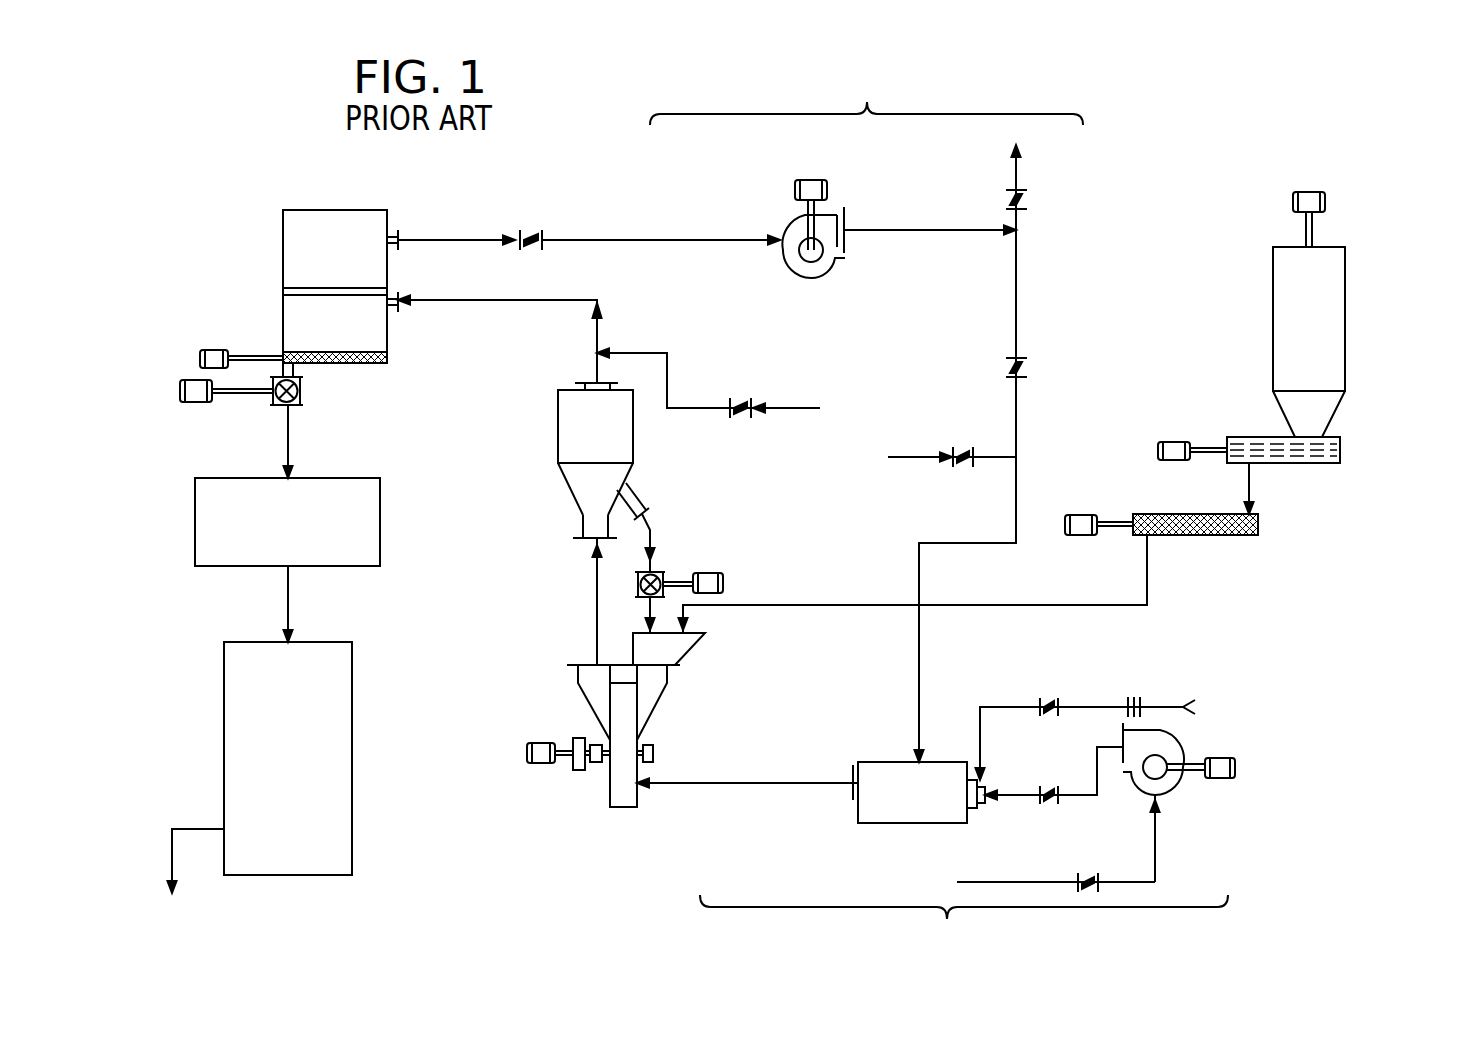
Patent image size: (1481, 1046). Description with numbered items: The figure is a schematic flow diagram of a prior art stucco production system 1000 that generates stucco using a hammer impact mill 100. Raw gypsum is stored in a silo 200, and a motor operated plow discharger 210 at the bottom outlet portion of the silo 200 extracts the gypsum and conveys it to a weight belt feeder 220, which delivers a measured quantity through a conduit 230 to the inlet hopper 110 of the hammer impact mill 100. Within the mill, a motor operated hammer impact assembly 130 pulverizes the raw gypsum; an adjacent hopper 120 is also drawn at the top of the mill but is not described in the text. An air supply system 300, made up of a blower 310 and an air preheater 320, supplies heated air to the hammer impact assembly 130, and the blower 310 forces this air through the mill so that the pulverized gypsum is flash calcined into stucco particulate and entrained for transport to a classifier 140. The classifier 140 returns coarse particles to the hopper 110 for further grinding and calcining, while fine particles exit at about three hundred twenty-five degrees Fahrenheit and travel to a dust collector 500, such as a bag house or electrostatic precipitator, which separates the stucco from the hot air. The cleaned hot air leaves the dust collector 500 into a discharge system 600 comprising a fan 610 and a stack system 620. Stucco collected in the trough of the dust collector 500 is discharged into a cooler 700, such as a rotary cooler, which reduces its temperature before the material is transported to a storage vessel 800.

The stucco production system 1000 is at (1160, 97).
The hammer impact mill 100 is at (633, 701).
The inlet hopper 110 is at (683, 653).
The hopper 120 is at (583, 655).
The hammer impact assembly 130 is at (573, 785).
The classifier 140 is at (580, 437).
The silo 200 is at (1378, 297).
The motor operated plow discharger 210 is at (1340, 450).
The weight belt feeder 220 is at (1258, 522).
The conduit 230 is at (1118, 607).
The air supply system 300 is at (1000, 825).
The blower 310 is at (1180, 798).
The air preheater 320 is at (927, 830).
The dust collector 500 is at (240, 193).
The discharge system 600 is at (913, 415).
The fan 610 is at (846, 185).
The stack system 620 is at (1055, 243).
The cooler 700 is at (195, 520).
The storage vessel 800 is at (224, 712).